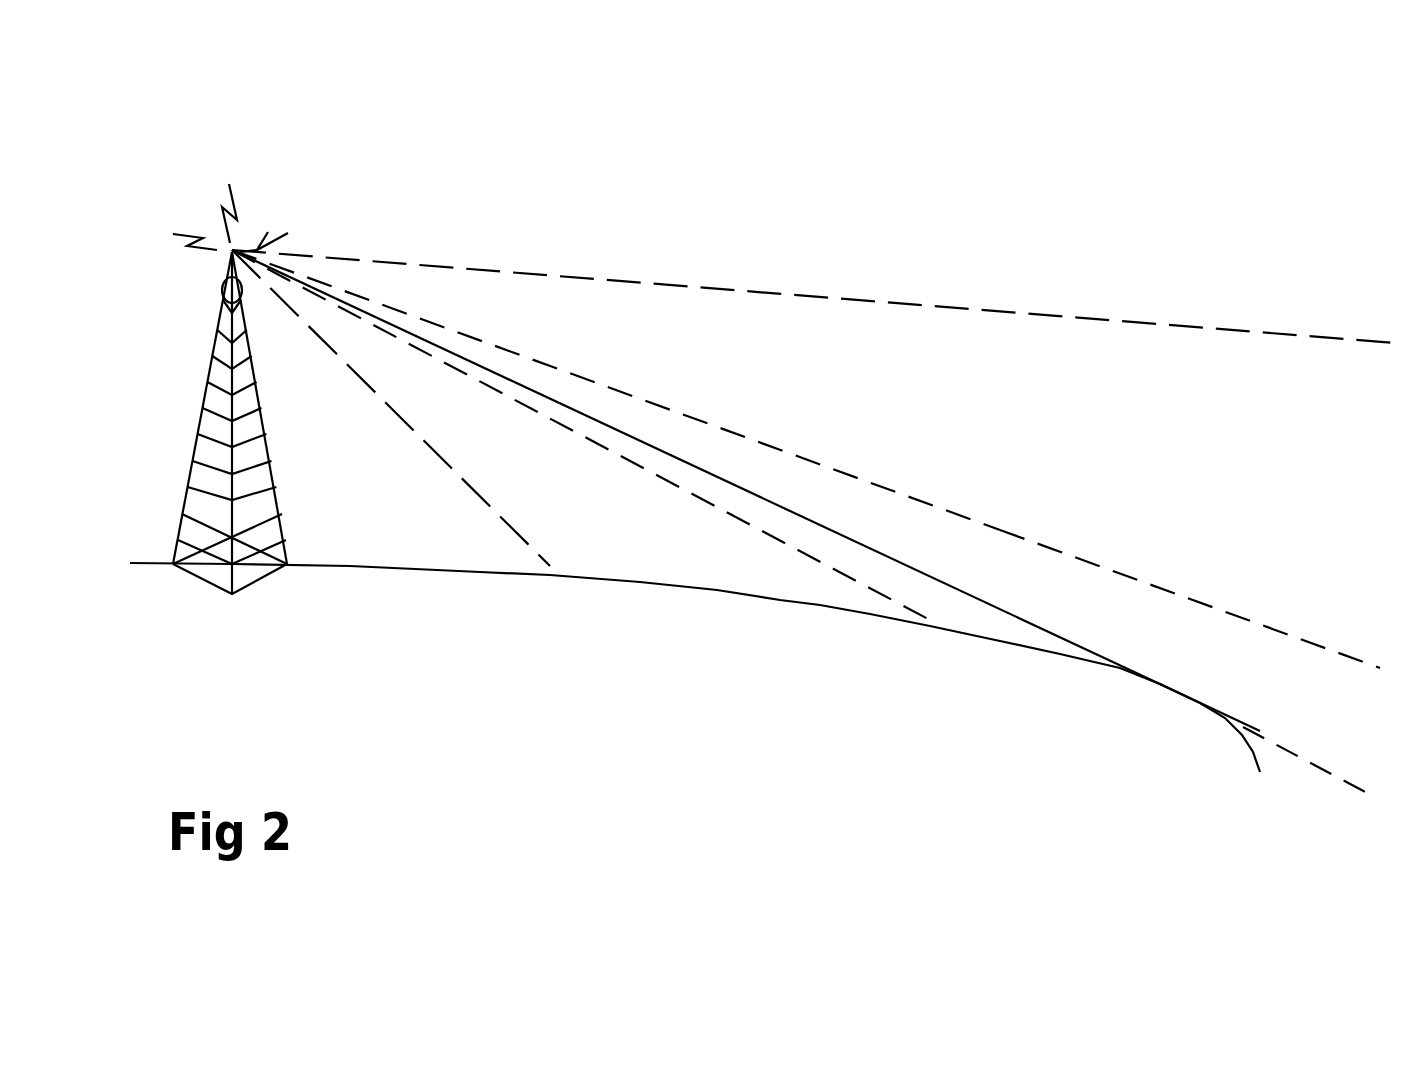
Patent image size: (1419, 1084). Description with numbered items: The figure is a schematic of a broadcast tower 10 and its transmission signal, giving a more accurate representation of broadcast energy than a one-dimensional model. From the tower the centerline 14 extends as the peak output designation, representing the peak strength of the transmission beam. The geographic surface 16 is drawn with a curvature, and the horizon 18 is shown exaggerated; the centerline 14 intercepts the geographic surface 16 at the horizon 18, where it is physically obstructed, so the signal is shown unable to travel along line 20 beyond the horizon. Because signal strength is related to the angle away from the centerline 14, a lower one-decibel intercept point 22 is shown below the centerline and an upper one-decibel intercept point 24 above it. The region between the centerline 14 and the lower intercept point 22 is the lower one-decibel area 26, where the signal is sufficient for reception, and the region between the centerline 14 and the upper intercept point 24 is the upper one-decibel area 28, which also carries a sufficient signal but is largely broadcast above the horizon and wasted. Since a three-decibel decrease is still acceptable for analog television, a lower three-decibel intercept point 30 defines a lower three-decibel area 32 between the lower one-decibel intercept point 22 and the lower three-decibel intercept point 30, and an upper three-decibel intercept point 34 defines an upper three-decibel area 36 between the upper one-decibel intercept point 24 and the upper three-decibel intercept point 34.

The broadcast tower 10 is at (195, 432).
The centerline 14 is at (897, 562).
The geographic surface 16 is at (497, 573).
The horizon 18 is at (1195, 699).
The line 20 is at (1267, 743).
The lower 1 dB intercept point 22 is at (718, 503).
The upper 1 dB intercept point 24 is at (820, 465).
The lower 1 dB area 26 is at (925, 592).
The upper 1 dB area 28 is at (1113, 613).
The lower 3 dB intercept point 30 is at (478, 493).
The lower 3 dB area 32 is at (717, 572).
The upper 3 dB intercept point 34 is at (680, 282).
The upper 3 dB area 36 is at (1070, 447).